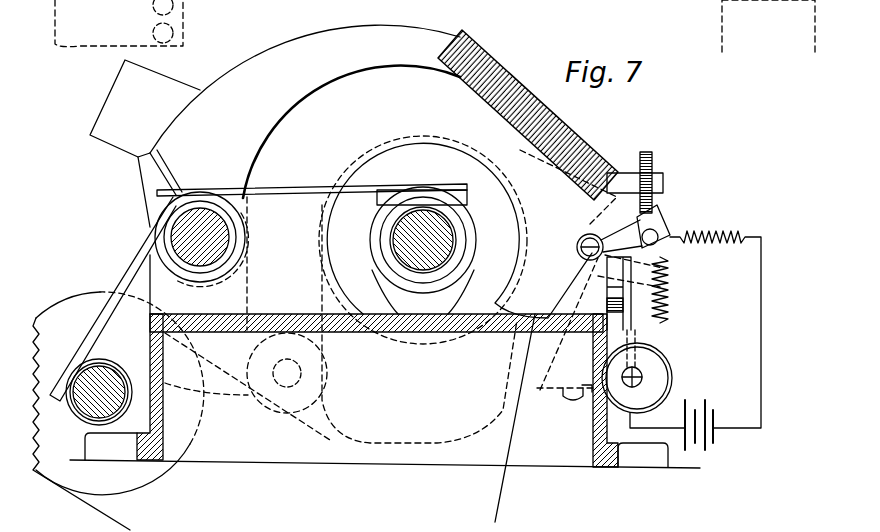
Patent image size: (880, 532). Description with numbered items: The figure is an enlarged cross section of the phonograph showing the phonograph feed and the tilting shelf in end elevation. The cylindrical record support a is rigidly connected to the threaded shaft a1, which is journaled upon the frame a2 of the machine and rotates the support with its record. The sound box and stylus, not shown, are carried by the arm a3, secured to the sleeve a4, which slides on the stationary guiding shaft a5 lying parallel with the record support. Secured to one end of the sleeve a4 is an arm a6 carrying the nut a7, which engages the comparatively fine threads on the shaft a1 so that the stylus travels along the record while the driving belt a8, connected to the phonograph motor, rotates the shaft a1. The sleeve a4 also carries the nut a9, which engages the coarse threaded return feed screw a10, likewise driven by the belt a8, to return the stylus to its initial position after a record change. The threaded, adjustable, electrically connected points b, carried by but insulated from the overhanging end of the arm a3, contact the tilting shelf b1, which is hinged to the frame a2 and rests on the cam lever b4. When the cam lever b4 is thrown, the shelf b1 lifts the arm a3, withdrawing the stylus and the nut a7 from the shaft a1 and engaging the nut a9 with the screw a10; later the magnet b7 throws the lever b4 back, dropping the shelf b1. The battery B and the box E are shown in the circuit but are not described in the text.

The record support a is at (458, 263).
The threaded shaft a1 is at (403, 248).
The frame a2 is at (347, 333).
The arm a3 is at (318, 80).
The sleeve a4 is at (237, 257).
The stationary guiding shaft a5 is at (198, 210).
The arm a6 is at (292, 188).
The nut a7 is at (463, 185).
The driving belt a8 is at (327, 357).
The nut a9 is at (82, 358).
The return feed screw a10 is at (103, 370).
The electrically connected points b is at (652, 165).
The tilting shelf b1 is at (662, 222).
The cam lever b4 is at (668, 277).
The magnet b7 is at (672, 372).
The battery B is at (712, 433).
The electromagnet E is at (768, 26).